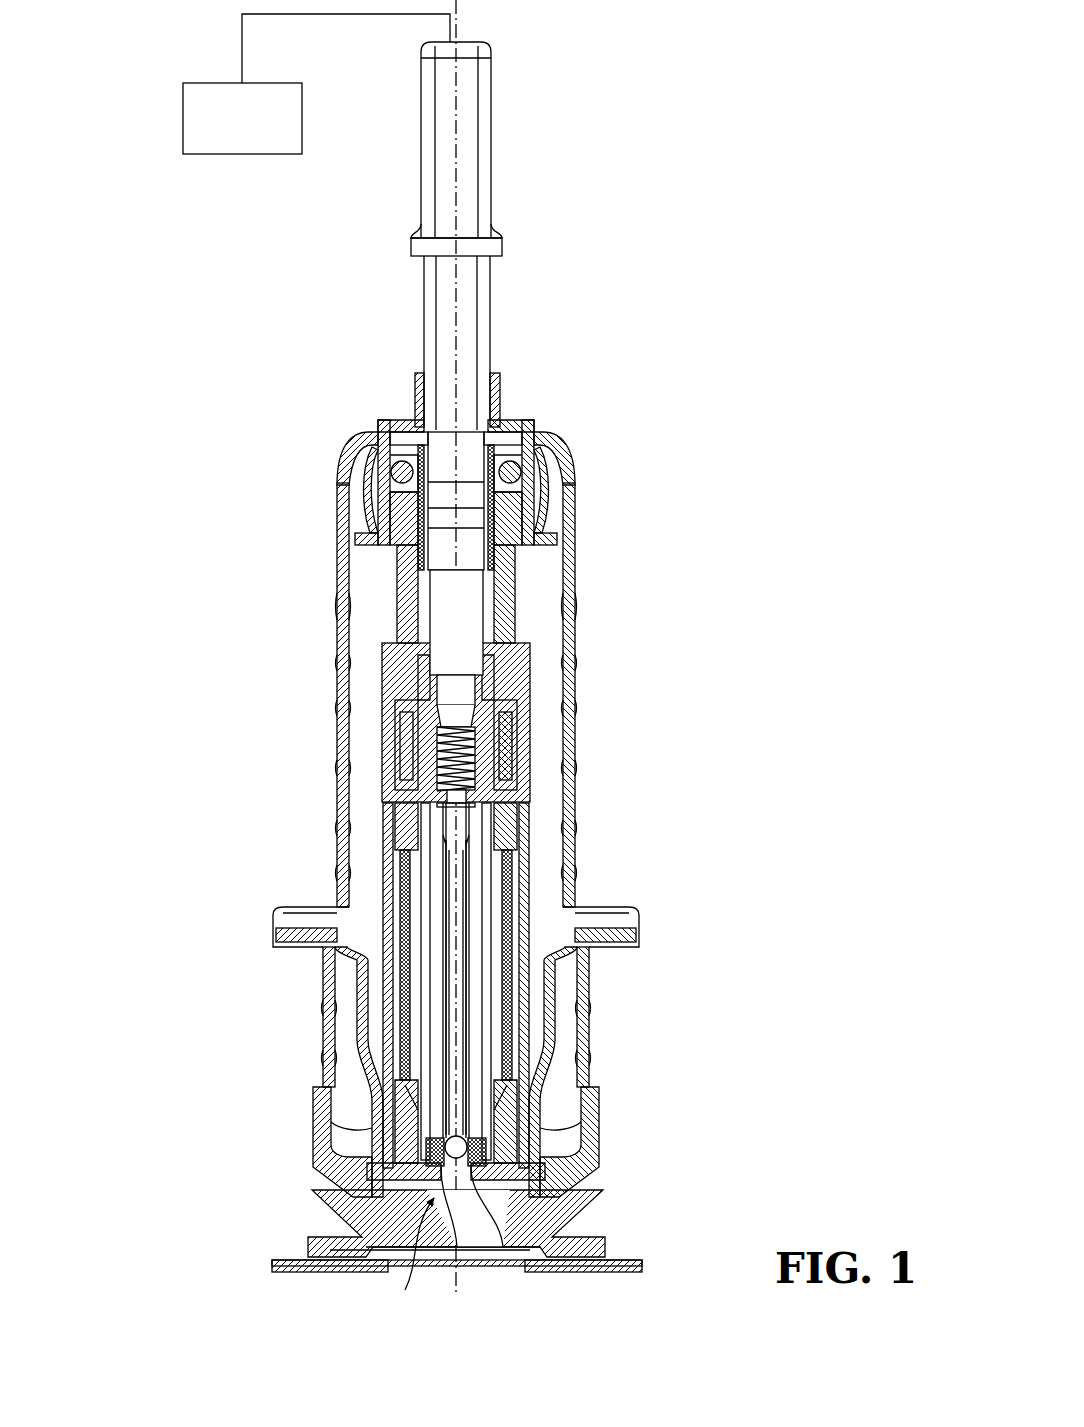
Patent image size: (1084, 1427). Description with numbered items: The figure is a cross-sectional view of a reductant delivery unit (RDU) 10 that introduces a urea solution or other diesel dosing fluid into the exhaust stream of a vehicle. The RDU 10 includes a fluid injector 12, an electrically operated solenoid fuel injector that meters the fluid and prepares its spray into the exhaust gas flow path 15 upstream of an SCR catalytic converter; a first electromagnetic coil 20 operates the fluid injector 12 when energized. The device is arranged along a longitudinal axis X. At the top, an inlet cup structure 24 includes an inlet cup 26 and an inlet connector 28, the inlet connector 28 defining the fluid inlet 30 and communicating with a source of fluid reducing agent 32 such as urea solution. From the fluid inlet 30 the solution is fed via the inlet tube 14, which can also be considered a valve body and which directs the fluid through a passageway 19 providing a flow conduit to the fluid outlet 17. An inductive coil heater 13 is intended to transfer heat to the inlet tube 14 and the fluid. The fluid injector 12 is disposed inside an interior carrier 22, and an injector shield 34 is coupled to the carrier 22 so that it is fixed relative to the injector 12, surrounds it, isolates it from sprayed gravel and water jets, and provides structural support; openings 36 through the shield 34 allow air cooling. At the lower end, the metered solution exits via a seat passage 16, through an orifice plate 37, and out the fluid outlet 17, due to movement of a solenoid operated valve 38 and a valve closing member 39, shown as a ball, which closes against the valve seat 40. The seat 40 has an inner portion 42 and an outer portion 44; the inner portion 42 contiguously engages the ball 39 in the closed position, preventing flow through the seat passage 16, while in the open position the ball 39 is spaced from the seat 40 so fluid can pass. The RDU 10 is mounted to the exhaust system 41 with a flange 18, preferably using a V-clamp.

The reductant delivery unit 10 is at (698, 335).
The longitudinal axis X is at (456, 143).
The fluid injector 12 is at (532, 672).
The inductive coil heater 13 is at (513, 865).
The inlet tube 14 is at (493, 942).
The exhaust gas flow path 15 is at (597, 1272).
The seat passage 16 is at (503, 1195).
The fluid outlet 17 is at (410, 1254).
The flange 18 is at (465, 1156).
The passageway 19 is at (481, 912).
The first electromagnetic coil 20 is at (505, 717).
The interior carrier 22 is at (588, 1032).
The inlet cup structure 24 is at (522, 405).
The inlet cup 26 is at (392, 424).
The inlet connector 28 is at (486, 216).
The fluid inlet 30 is at (487, 52).
The source of fluid reducing agent 32 is at (183, 120).
The injector shield 34 is at (552, 567).
The openings 36 is at (573, 608).
The orifice plate 37 is at (467, 1170).
The solenoid operated valve 38 is at (452, 1014).
The valve closing member 39 is at (448, 1141).
The valve seat 40 is at (528, 1164).
The exhaust system 41 is at (293, 1268).
The inner portion 42 is at (360, 1197).
The outer portion 44 is at (446, 1170).